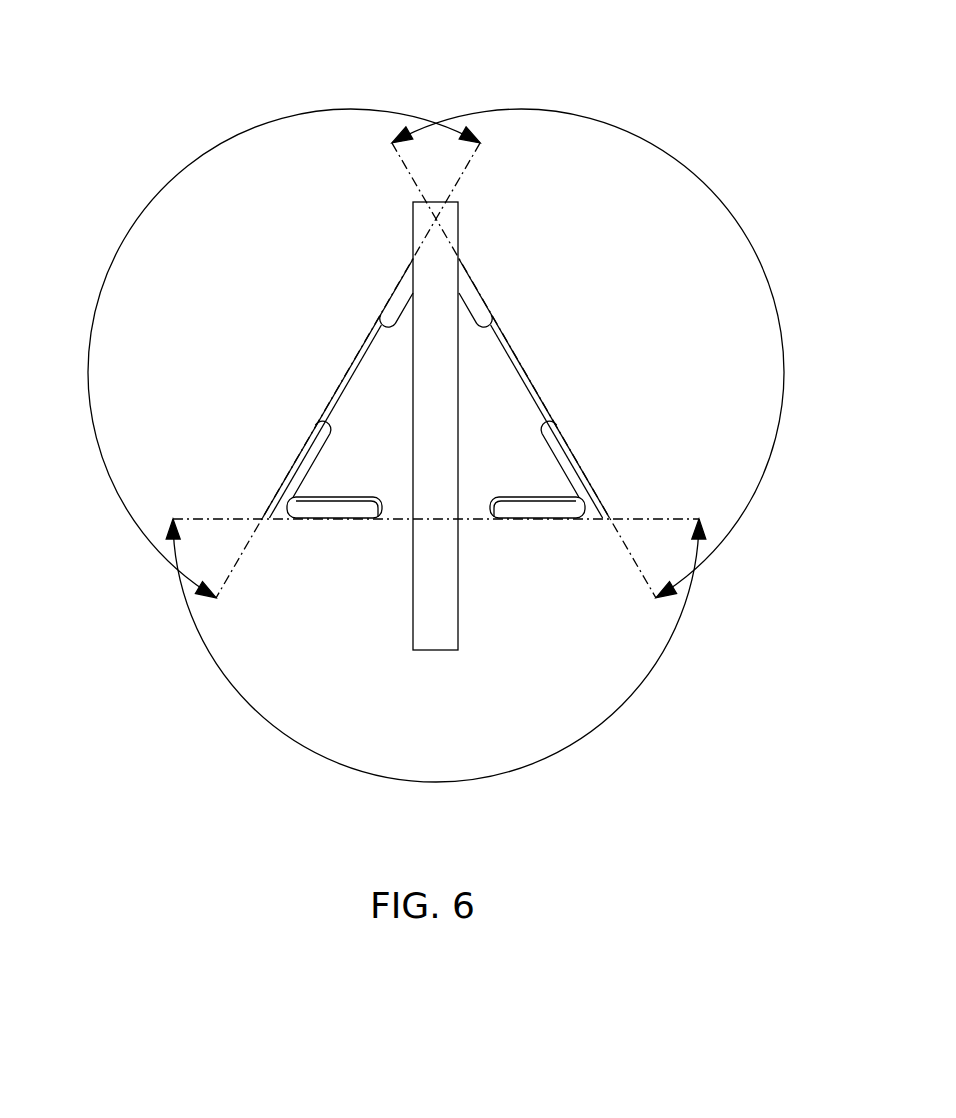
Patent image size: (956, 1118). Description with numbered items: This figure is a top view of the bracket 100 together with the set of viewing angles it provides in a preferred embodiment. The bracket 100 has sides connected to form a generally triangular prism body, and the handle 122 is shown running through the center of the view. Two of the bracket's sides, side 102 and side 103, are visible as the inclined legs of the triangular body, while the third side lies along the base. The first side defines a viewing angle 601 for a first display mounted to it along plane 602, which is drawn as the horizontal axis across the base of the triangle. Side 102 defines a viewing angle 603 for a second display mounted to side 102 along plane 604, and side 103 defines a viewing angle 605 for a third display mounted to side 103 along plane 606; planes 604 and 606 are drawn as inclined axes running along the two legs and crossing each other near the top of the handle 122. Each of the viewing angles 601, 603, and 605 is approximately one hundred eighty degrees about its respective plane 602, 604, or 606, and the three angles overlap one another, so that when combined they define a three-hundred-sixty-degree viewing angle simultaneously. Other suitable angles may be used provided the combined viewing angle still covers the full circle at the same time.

The bracket 100 is at (185, 70).
The side 102 is at (530, 372).
The side 103 is at (345, 372).
The handle 122 is at (460, 600).
The viewing angle 601 is at (273, 723).
The plane 602 is at (218, 518).
The viewing angle 603 is at (748, 218).
The plane 604 is at (631, 556).
The viewing angle 605 is at (138, 218).
The plane 606 is at (243, 553).